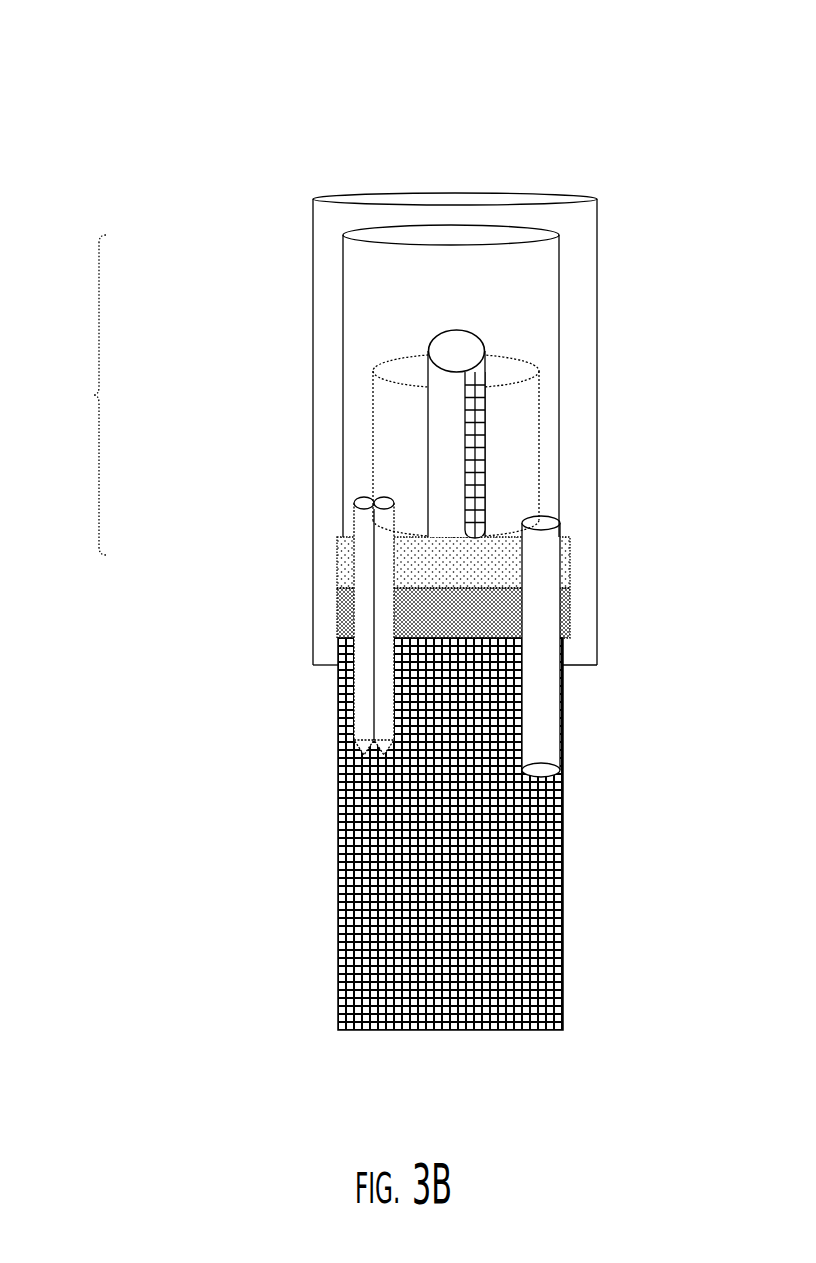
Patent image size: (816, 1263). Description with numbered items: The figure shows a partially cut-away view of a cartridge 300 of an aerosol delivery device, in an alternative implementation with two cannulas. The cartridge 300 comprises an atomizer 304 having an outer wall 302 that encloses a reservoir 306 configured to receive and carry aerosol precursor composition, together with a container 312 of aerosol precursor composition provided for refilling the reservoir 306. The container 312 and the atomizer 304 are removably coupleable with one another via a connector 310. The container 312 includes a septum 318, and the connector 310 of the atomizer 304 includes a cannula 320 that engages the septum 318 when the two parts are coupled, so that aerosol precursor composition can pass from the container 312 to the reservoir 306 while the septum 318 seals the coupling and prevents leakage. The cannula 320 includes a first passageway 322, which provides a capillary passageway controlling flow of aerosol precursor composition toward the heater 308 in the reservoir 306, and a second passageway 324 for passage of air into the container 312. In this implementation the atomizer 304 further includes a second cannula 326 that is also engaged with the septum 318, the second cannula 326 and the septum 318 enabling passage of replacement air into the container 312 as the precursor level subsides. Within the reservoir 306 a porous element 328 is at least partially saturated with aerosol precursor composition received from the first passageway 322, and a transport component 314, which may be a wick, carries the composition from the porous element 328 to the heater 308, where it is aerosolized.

The cartridge 300 is at (140, 107).
The outer wall 302 is at (308, 330).
The atomizer 304 is at (61, 395).
The reservoir 306 is at (560, 280).
The heater 308 is at (438, 423).
The connector 310 is at (342, 563).
The container 312 is at (343, 910).
The transport component 314 is at (485, 470).
The septum 318 is at (337, 622).
The cannula 320 is at (301, 581).
The first passageway 322 is at (380, 500).
The second passageway 324 is at (357, 497).
The second cannula 326 is at (562, 626).
The porous element 328 is at (543, 387).